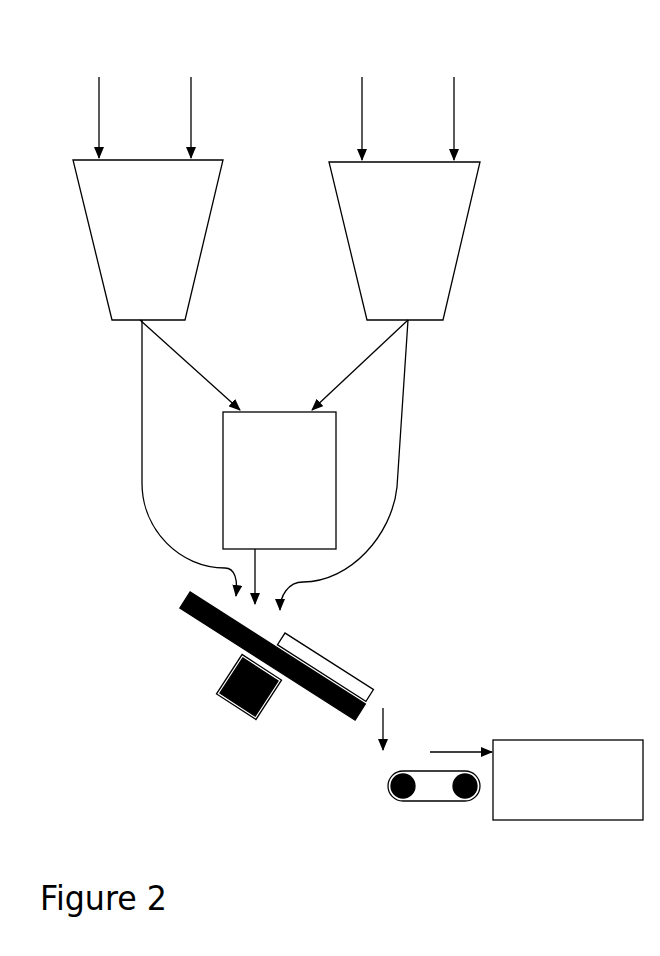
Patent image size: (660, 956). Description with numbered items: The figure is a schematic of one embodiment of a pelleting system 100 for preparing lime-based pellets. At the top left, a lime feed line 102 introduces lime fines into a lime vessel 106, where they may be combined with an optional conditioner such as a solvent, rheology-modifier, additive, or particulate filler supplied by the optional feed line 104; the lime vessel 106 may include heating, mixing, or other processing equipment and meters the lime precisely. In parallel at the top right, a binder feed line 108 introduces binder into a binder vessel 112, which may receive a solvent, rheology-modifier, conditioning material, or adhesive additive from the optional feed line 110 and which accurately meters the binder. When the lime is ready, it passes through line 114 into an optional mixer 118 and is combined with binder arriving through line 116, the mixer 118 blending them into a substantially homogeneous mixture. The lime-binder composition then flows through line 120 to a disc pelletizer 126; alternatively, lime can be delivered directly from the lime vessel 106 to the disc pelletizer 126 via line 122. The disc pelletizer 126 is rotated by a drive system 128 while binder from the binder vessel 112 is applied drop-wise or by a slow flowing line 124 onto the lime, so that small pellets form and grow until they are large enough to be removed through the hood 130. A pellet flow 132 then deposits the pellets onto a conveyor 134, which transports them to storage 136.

The pelleting system 100 is at (290, 64).
The lime feed line 102 is at (98, 105).
The optional feed line 104 is at (196, 105).
The lime vessel 106 is at (148, 240).
The binder feed line 108 is at (368, 106).
The optional feed line 110 is at (459, 106).
The binder vessel 112 is at (404, 241).
The line 114 is at (190, 365).
The line 116 is at (360, 365).
The mixer 118 is at (279, 480).
The line 120 is at (273, 576).
The line 122 is at (169, 458).
The line 124 is at (360, 465).
The disc pelletizer 126 is at (237, 629).
The drive system 128 is at (243, 690).
The hood 130 is at (352, 685).
The pellet flow 132 is at (400, 727).
The conveyor 134 is at (432, 790).
The storage 136 is at (568, 780).